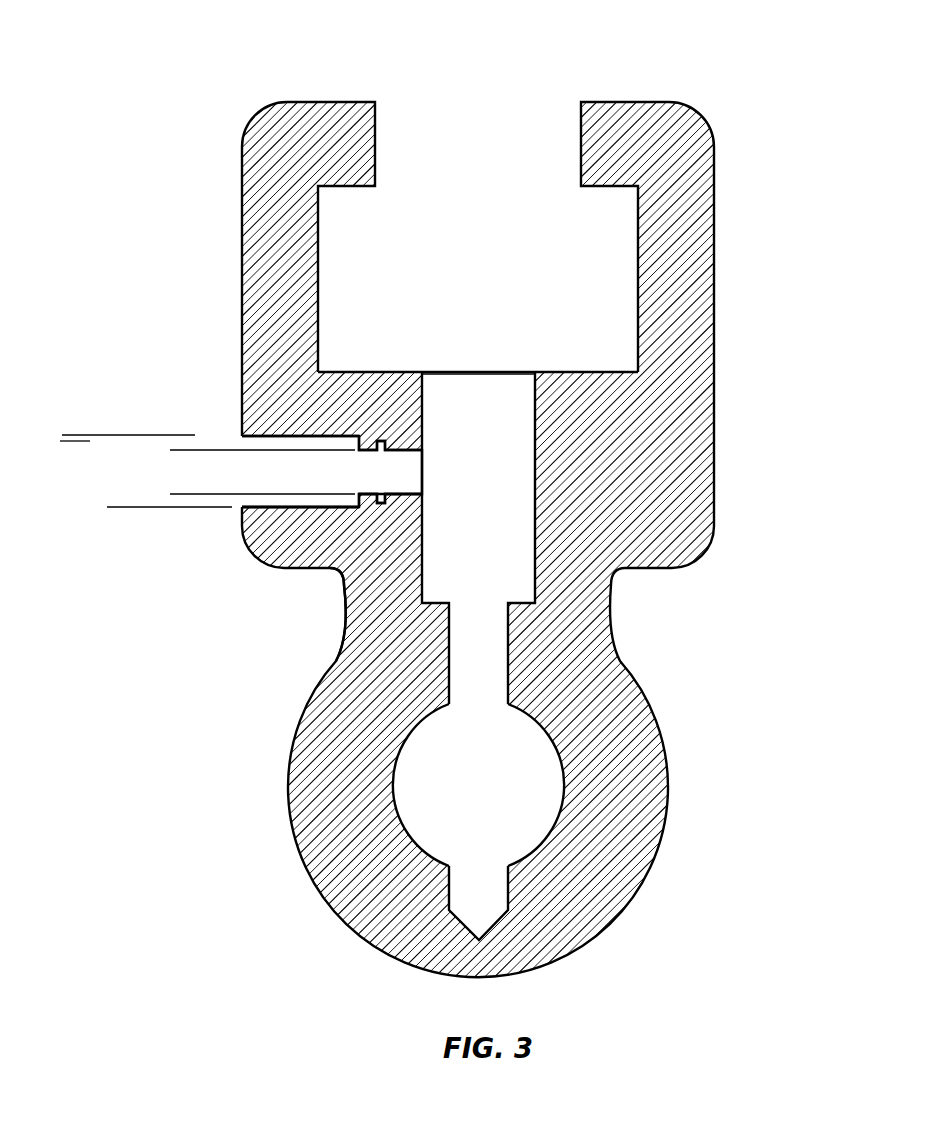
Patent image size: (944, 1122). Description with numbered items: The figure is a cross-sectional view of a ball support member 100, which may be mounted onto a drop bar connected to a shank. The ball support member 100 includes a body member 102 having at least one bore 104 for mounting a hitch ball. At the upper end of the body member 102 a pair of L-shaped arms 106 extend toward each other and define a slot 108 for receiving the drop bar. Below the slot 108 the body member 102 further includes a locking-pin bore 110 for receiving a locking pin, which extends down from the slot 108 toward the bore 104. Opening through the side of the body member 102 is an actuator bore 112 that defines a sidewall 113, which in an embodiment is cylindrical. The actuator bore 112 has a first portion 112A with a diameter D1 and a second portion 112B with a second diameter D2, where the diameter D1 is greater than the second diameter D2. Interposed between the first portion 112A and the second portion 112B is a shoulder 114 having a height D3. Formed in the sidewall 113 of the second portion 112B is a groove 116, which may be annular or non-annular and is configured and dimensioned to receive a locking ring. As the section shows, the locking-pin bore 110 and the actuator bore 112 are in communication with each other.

The ball support member 100 is at (146, 108).
The body member 102 is at (242, 250).
The bore 104 is at (563, 802).
The L-shaped arms 106 is at (340, 108).
The slot 108 is at (490, 268).
The locking-pin bore 110 is at (492, 407).
The actuator bore 112 is at (285, 460).
The first portion 112A is at (268, 448).
The second portion 112B is at (370, 442).
The sidewall 113 is at (358, 496).
The shoulder 114 is at (382, 500).
The groove 116 is at (338, 570).
The diameter D1 is at (112, 435).
The second diameter D2 is at (177, 450).
The height D3 is at (67, 392).